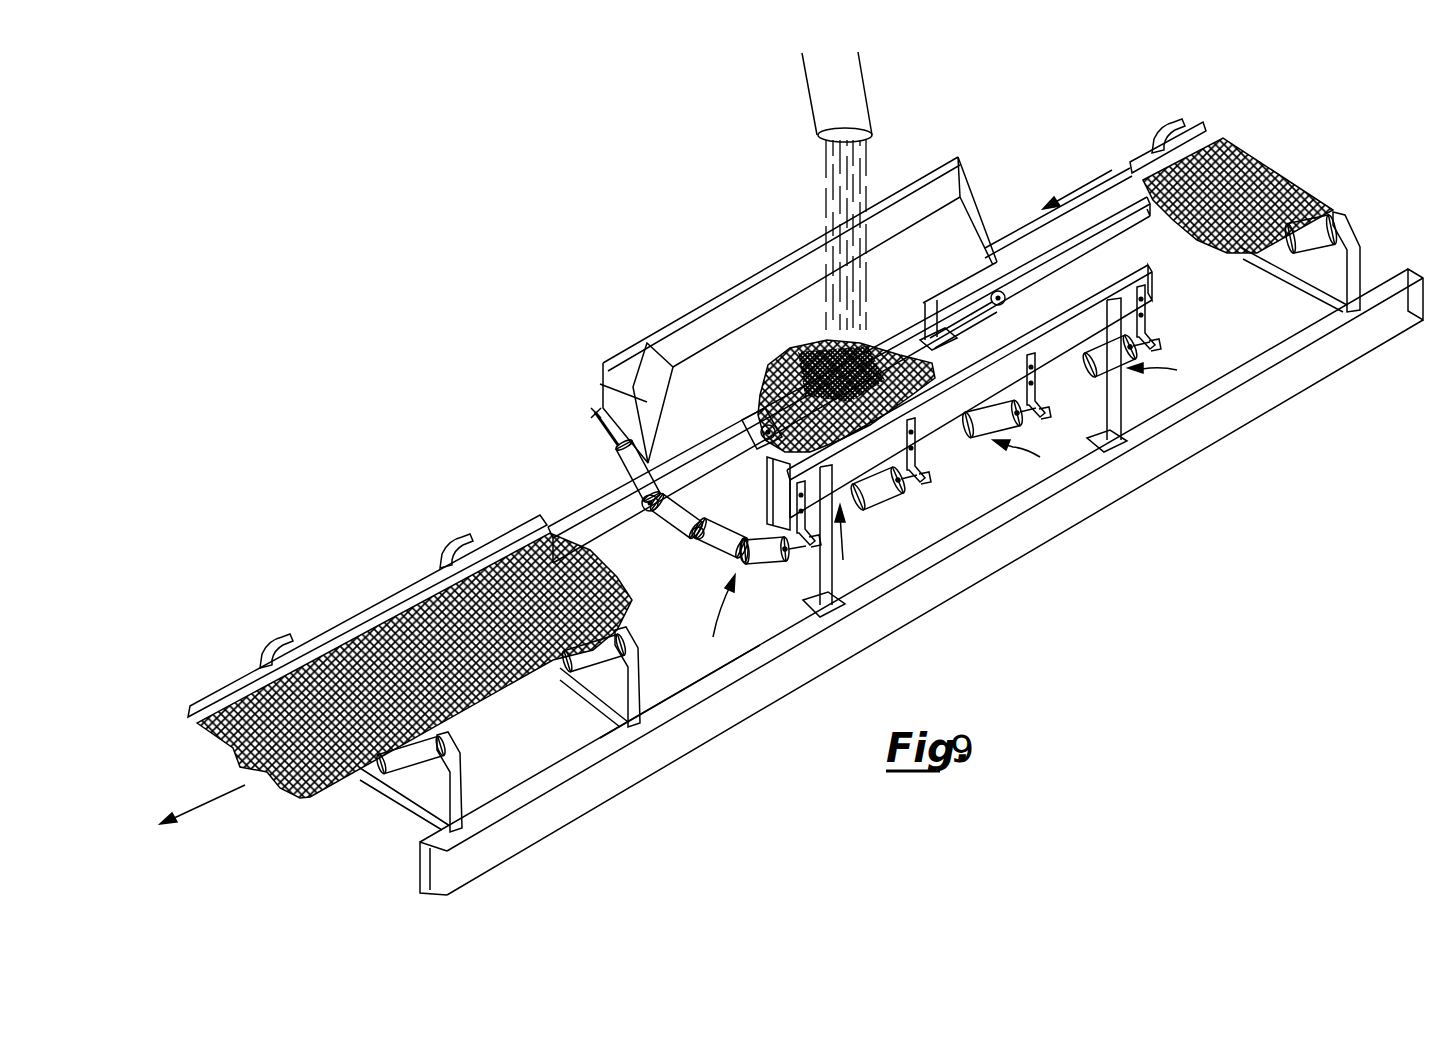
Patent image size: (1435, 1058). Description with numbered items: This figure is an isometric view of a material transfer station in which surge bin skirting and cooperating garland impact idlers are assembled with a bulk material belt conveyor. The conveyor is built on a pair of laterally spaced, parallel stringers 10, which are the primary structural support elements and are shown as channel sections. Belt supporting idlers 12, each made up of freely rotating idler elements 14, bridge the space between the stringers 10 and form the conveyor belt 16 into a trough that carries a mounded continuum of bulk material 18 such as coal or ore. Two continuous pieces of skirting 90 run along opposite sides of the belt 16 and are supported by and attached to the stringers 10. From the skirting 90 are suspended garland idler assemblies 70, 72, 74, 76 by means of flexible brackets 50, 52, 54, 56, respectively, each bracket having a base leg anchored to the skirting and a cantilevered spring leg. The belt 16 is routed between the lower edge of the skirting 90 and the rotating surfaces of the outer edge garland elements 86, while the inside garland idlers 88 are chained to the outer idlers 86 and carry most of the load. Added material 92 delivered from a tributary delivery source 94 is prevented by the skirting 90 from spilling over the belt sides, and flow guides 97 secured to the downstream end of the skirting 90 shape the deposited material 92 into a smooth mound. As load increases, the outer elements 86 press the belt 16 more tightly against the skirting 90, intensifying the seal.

The stringers 10 is at (508, 835).
The belt supporting idlers 12 is at (683, 692).
The idler elements 14 is at (560, 670).
The conveyor belt 16 is at (360, 617).
The bulk material 18 is at (313, 657).
The garland idler support bracket 50 is at (1153, 305).
The garland idler support bracket 52 is at (1025, 377).
The garland idler support bracket 54 is at (907, 447).
The garland idler support bracket 56 is at (797, 548).
The garland idler 70 is at (1168, 370).
The garland idler 72 is at (1031, 453).
The garland idler 74 is at (965, 457).
The garland idler 76 is at (718, 620).
The outer edge idler 86 is at (613, 460).
The inside garland idler 88 is at (727, 552).
The skirting 90 is at (727, 397).
The added material 92 is at (830, 192).
The tributary delivery source 94 is at (850, 82).
The flow guides 97 is at (600, 384).